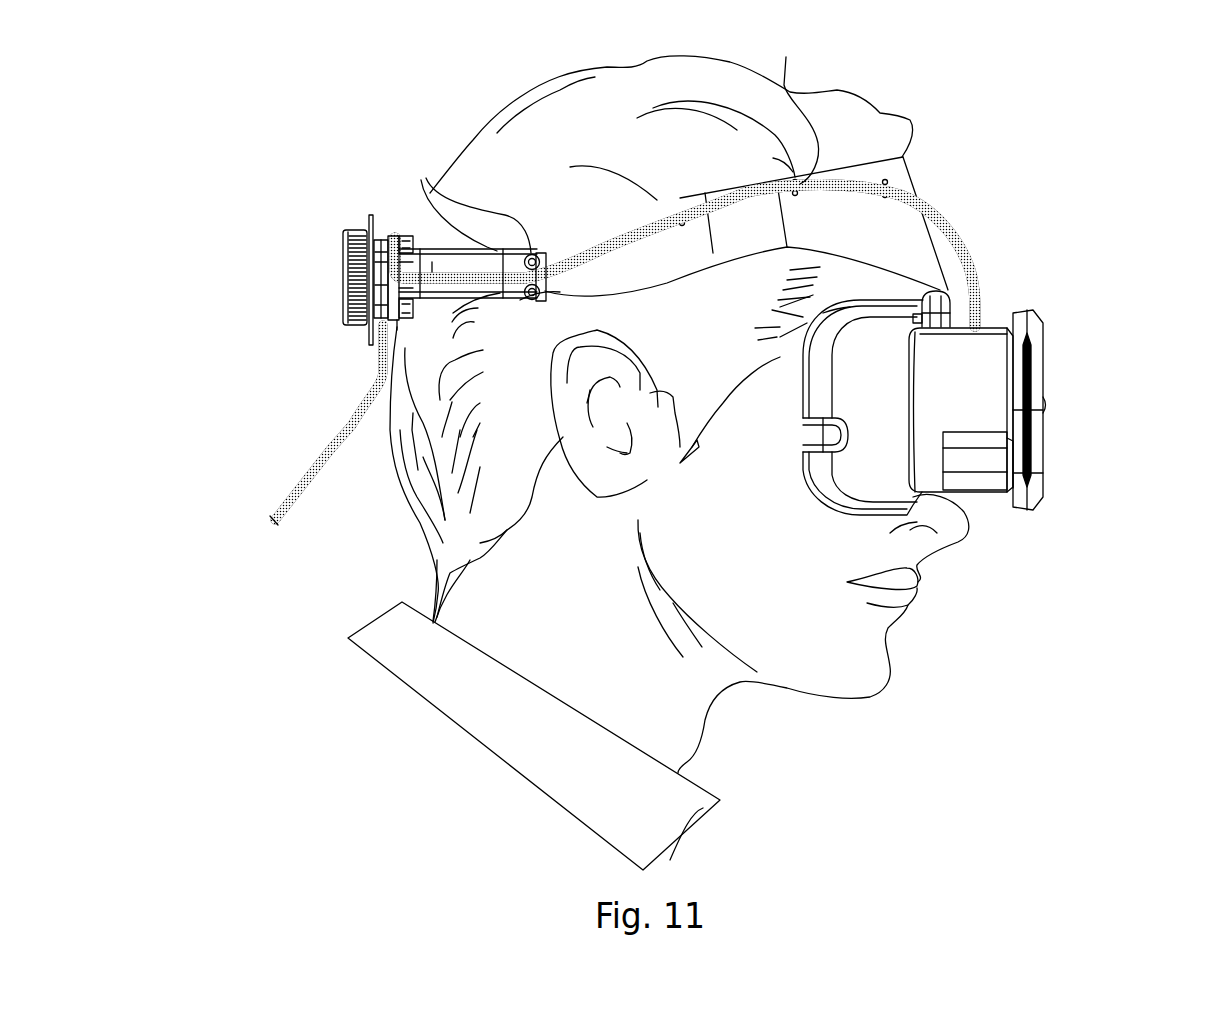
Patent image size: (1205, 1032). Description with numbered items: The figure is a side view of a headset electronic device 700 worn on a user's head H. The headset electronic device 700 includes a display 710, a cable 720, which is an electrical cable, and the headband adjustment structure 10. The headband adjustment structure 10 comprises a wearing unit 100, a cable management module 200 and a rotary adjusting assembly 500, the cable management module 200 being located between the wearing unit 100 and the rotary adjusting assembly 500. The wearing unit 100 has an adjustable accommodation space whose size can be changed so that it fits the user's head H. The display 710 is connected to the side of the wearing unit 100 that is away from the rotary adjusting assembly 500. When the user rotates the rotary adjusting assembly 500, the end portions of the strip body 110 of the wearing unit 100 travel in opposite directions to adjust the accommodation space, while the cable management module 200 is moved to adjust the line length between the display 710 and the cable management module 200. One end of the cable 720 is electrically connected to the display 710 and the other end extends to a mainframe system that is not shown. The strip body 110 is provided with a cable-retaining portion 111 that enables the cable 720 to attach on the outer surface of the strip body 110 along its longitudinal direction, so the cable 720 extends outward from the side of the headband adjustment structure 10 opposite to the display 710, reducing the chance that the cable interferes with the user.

The headband adjustment structure 10 is at (237, 133).
The strip body 110 is at (391, 235).
The cable-retaining portion 111 is at (432, 268).
The cable management module 200 is at (373, 217).
The rotary adjusting assembly 500 is at (344, 253).
The wearing unit 100 is at (912, 168).
The cable 720 is at (978, 262).
The headset electronic device 700 is at (1188, 55).
The display 710 is at (1043, 362).
The user's head H is at (598, 81).